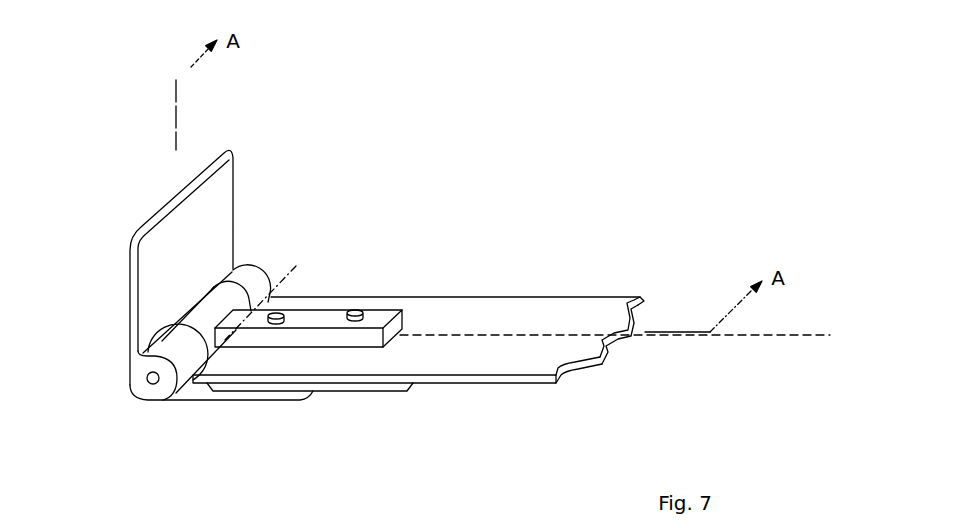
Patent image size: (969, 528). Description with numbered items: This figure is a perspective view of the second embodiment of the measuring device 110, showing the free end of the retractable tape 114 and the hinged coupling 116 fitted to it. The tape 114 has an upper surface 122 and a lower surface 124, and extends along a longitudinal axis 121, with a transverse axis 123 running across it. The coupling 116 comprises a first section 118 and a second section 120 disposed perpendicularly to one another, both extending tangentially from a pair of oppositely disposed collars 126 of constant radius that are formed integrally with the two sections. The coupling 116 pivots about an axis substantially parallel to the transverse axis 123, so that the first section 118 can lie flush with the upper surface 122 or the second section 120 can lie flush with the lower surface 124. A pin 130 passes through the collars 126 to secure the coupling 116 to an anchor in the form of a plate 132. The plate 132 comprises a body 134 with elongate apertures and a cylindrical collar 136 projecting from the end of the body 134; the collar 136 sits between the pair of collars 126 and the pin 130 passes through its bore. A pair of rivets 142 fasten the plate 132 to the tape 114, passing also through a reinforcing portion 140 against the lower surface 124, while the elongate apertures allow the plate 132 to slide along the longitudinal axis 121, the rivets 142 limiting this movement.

The measuring device 110 is at (423, 217).
The retractable tape 114 is at (530, 297).
The coupling 116 is at (147, 222).
The first section 118 is at (135, 287).
The second section 120 is at (283, 400).
The longitudinal axis 121 is at (770, 340).
The upper surface 122 is at (636, 300).
The transverse axis 123 is at (292, 268).
The lower surface 124 is at (557, 384).
The collars 126 is at (243, 277).
The pin 130 is at (152, 386).
The plate 132 is at (407, 317).
The body 134 is at (311, 316).
The cylindrical collar 136 is at (207, 312).
The reinforcing portion 140 is at (402, 390).
The rivets 142 is at (358, 313).